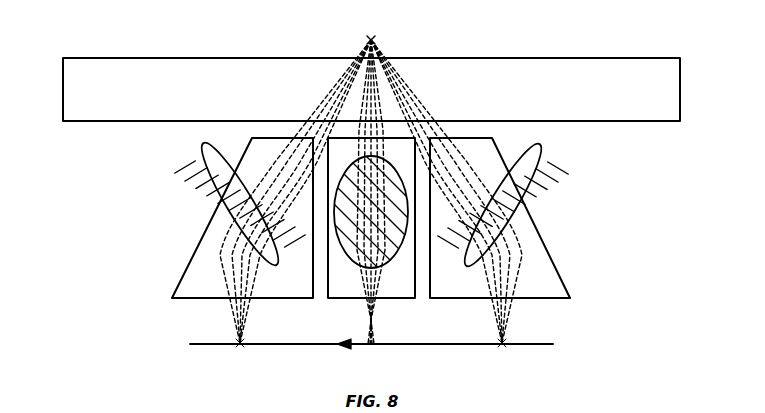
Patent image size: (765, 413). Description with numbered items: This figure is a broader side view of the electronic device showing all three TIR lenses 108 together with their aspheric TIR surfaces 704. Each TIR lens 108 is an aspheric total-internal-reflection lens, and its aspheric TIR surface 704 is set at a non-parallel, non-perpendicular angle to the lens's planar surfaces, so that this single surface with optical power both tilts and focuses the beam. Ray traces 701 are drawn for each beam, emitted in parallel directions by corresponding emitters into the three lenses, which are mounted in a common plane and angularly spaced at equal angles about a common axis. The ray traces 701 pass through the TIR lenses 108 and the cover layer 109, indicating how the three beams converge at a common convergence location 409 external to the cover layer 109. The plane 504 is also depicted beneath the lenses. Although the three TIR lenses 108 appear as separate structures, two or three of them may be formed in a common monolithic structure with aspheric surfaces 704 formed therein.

The common convergence location 409 is at (368, 41).
The cover layer 109 is at (229, 97).
The TIR lens 108 is at (203, 290).
The aspheric TIR surface 704 is at (232, 176).
The ray traces 701 is at (245, 318).
The image plane 504 is at (358, 371).